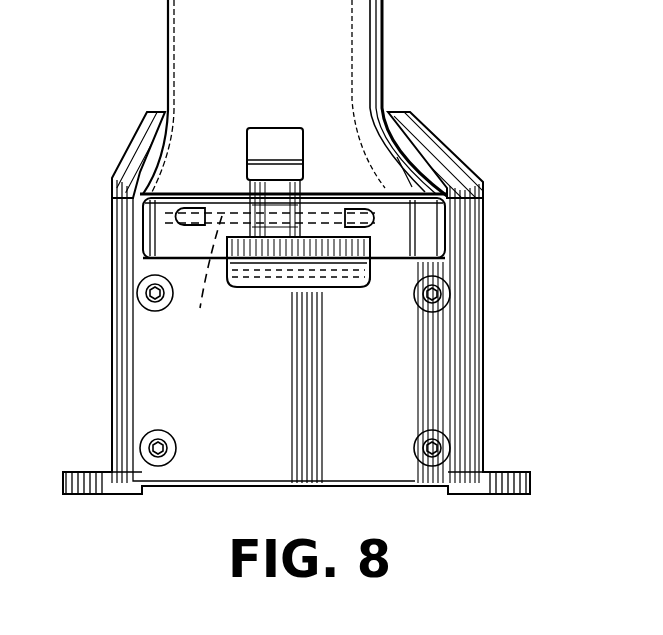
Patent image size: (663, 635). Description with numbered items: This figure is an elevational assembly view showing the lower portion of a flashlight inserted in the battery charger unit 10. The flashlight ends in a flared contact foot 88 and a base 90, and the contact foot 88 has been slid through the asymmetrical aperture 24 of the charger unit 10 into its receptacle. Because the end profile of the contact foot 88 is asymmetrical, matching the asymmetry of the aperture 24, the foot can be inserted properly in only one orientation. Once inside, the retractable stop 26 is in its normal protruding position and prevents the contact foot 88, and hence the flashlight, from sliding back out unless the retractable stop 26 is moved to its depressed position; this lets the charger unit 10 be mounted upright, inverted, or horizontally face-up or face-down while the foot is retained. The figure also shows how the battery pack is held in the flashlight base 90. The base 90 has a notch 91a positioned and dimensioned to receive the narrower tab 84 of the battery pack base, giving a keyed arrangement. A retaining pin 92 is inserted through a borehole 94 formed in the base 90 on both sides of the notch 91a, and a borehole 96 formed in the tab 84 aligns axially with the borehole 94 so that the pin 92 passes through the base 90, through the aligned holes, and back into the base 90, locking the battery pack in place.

The battery charger unit 10 is at (497, 358).
The aperture 24 is at (150, 140).
The retractable stop 26 is at (366, 274).
The tab 84 is at (306, 186).
The flared contact foot 88 is at (383, 168).
The flashlight base 90 is at (455, 252).
The notch 91a is at (252, 182).
The retaining pin 92 is at (180, 222).
The borehole 94 is at (201, 278).
The borehole 96 is at (310, 258).